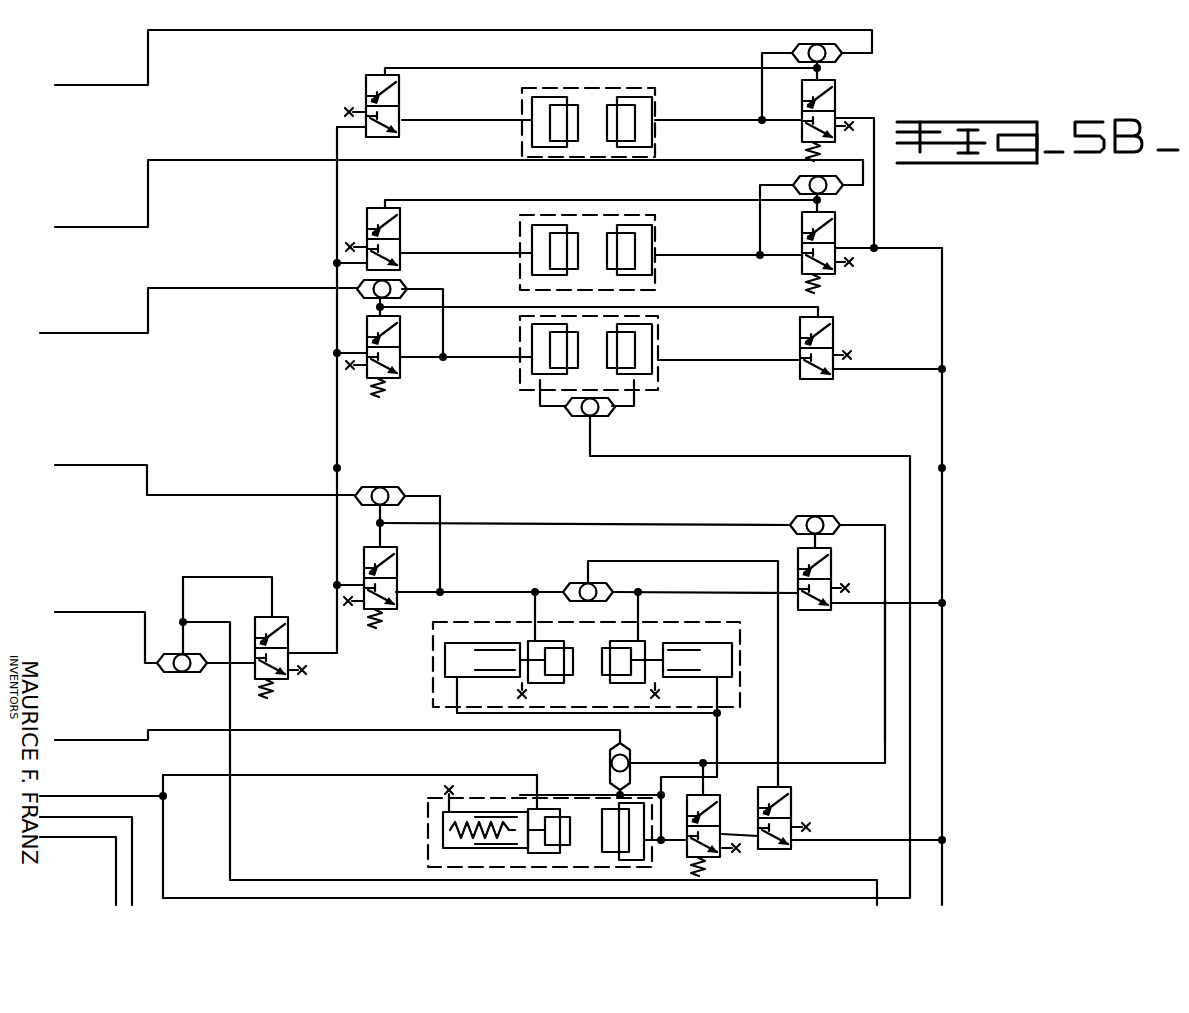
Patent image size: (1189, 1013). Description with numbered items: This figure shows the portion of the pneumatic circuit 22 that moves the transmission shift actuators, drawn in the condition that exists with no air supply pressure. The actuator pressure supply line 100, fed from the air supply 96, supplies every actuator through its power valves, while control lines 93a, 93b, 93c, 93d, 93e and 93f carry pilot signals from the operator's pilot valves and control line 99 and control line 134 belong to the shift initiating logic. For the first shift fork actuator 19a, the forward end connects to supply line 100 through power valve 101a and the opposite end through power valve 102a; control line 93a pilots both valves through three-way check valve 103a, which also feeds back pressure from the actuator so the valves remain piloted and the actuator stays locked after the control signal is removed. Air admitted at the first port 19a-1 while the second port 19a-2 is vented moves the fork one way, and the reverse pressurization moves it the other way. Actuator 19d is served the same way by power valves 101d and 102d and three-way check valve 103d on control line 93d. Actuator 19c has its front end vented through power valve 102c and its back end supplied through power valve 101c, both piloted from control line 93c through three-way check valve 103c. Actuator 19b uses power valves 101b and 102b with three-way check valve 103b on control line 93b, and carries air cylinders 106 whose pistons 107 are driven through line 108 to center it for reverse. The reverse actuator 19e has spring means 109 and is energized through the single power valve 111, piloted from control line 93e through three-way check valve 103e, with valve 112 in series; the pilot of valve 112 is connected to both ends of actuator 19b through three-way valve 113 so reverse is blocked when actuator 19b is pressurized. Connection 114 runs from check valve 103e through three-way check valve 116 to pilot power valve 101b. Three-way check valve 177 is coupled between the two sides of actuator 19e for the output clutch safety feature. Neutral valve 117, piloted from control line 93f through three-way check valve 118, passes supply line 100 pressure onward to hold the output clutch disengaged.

The hydraulic control circuit 22 is at (968, 248).
The control line 93d is at (78, 88).
The control line 93a is at (78, 230).
The control line 93c is at (78, 335).
The control line 93b is at (90, 466).
The control line 93f is at (75, 613).
The control line 93e is at (68, 727).
The air supply 96 is at (70, 796).
The control line 99 is at (132, 835).
The control line 134 is at (116, 850).
The actuator pressure supply line 100 is at (337, 220).
The power valve 101d is at (402, 100).
The power valve 102d is at (835, 100).
The three-way check valve 103d is at (790, 52).
The actuator 19d is at (660, 104).
The power valve 101a is at (402, 218).
The power valve 102a is at (801, 272).
The three-way check valve 103a is at (790, 184).
The first shift fork actuator 19a is at (658, 228).
The first air pressure port 19a-1 is at (433, 256).
The second air pressure port 19a-2 is at (668, 254).
The three-way check valve 103c is at (360, 296).
The power valve 102c is at (400, 372).
The actuator 19c is at (660, 378).
The power valve 101c is at (800, 336).
The three-way check valve 177 is at (600, 420).
The three-way check valve 103b is at (419, 482).
The power valve 102b is at (396, 604).
The three-way valve 113 is at (600, 585).
The three-way check valve 116 is at (823, 520).
The power valve 101b is at (812, 610).
The connection 114 is at (884, 664).
The neutral valve 117 is at (272, 608).
The three-way check valve 118 is at (168, 675).
The actuator 19b is at (561, 718).
The air cylinders 106 is at (445, 658).
The pistons 107 is at (504, 644).
The line 108 is at (717, 728).
The three-way check valve 103e is at (630, 748).
The reverse actuator 19e is at (499, 827).
The spring means 109 is at (443, 820).
The power valve 111 is at (696, 854).
The valve 112 is at (783, 794).